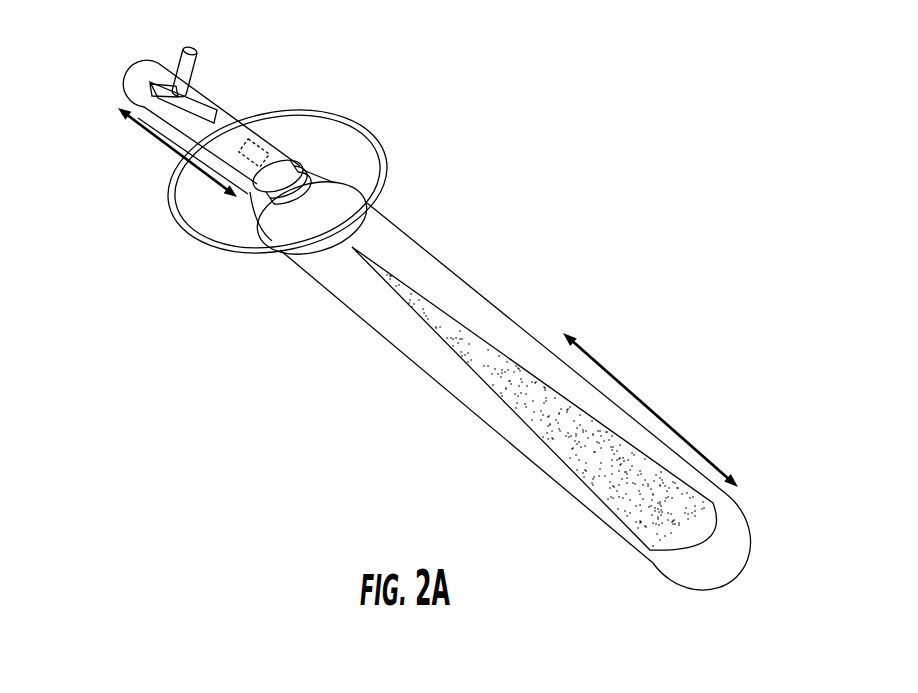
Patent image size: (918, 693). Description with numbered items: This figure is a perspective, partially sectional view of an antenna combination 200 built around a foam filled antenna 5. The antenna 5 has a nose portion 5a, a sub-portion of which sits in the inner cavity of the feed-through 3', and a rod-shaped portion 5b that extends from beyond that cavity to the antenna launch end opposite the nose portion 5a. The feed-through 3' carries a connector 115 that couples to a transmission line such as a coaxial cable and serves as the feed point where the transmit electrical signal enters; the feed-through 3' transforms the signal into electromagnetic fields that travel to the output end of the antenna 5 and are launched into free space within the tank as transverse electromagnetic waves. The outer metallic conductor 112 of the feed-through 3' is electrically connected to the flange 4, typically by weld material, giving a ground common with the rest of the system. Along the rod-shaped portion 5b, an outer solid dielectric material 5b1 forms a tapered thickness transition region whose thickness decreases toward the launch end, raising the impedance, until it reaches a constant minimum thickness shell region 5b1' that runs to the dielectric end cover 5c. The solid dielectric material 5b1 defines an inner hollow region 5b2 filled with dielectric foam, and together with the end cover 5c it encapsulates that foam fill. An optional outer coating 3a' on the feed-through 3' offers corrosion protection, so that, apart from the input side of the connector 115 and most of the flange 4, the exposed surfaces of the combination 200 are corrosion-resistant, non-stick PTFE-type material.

The antenna combination 200 is at (556, 196).
The flange 4 is at (357, 140).
The foam filled antenna 5 is at (297, 299).
The nose portion 5a is at (250, 160).
The rod-shaped portion 5b is at (338, 408).
The outer solid dielectric material 5b1 is at (502, 383).
The inner hollow region 5b2 is at (467, 358).
The constant minimum thickness shell region 5b1' is at (650, 393).
The dielectric end cover 5c is at (703, 555).
The outer metallic conductor 112 is at (250, 165).
The feed-through 3' is at (166, 140).
The outer coating 3a' is at (166, 155).
The connector 115 is at (199, 62).